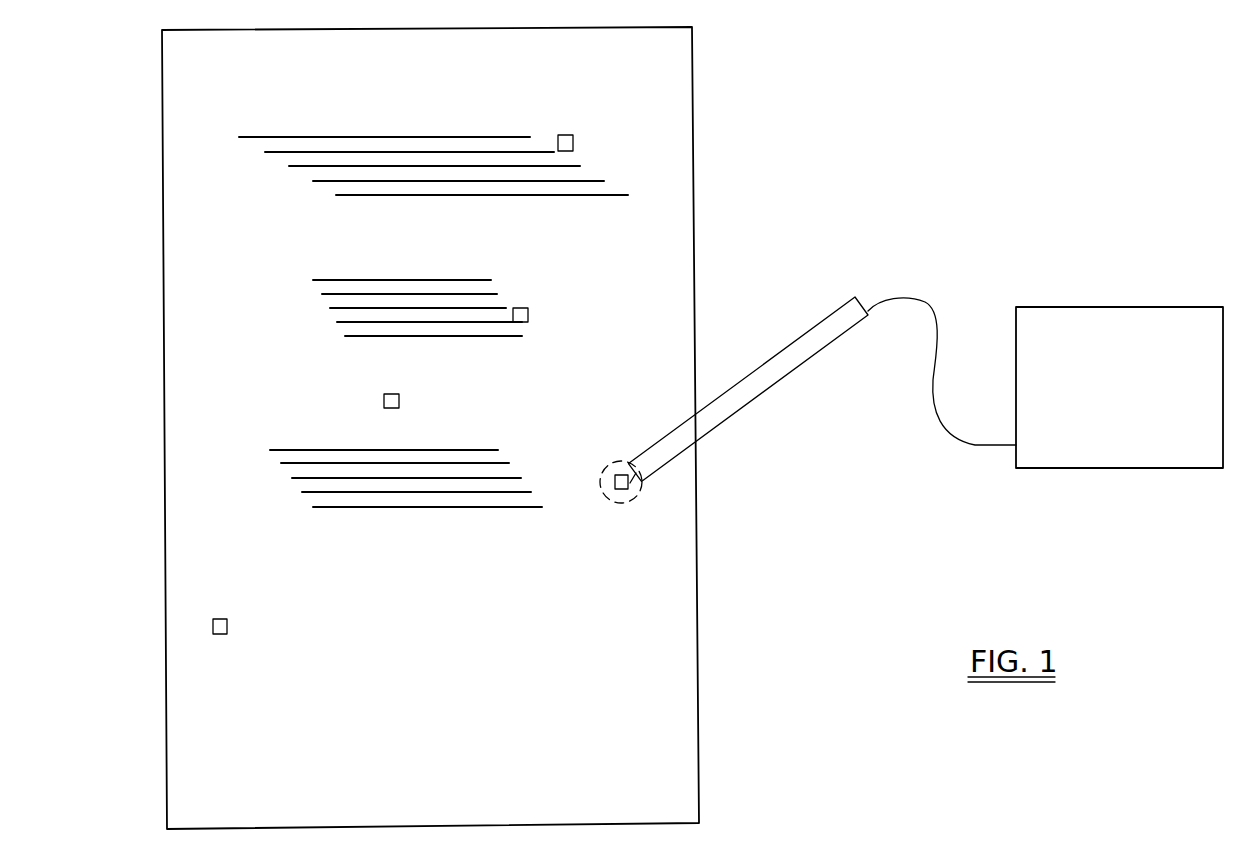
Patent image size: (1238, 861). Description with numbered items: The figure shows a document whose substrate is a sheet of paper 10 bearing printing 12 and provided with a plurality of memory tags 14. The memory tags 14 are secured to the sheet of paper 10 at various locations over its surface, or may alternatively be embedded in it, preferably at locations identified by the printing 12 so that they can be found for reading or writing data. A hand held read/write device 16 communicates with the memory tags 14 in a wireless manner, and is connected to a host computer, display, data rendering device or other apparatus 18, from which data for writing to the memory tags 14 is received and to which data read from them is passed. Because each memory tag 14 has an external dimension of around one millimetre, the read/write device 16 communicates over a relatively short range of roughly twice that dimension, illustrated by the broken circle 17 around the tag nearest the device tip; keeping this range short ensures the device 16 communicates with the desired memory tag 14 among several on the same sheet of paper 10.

The sheet of paper 10 is at (203, 300).
The printing 12 is at (313, 166).
The memory tags 14 is at (573, 144).
The hand held read/write device 16 is at (775, 378).
The broken circle 17 is at (615, 503).
The host computer, display, data rendering device or other apparatus 18 is at (1116, 462).